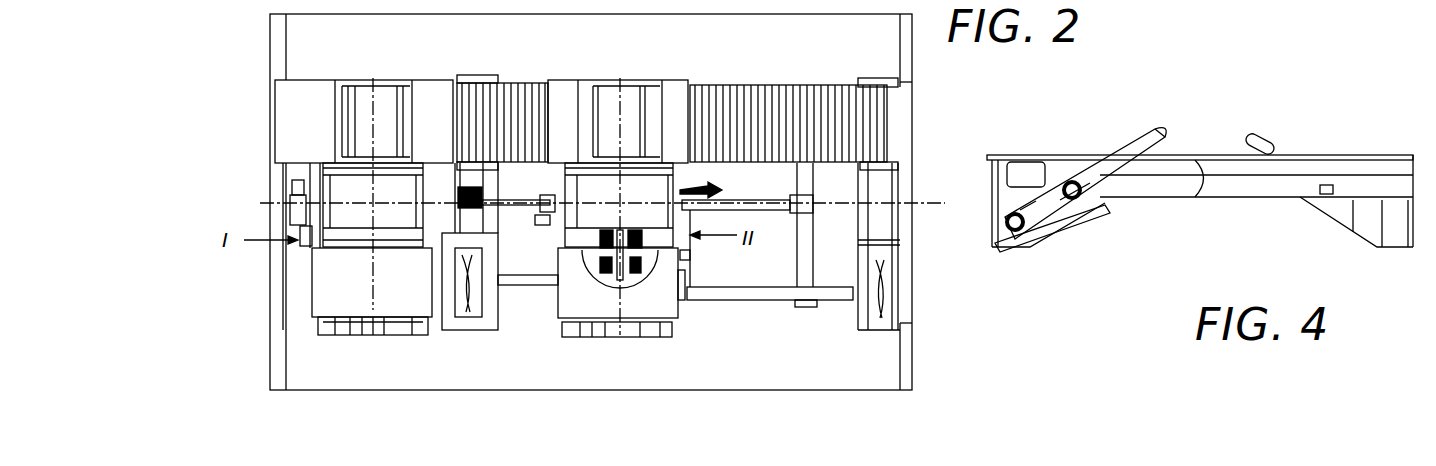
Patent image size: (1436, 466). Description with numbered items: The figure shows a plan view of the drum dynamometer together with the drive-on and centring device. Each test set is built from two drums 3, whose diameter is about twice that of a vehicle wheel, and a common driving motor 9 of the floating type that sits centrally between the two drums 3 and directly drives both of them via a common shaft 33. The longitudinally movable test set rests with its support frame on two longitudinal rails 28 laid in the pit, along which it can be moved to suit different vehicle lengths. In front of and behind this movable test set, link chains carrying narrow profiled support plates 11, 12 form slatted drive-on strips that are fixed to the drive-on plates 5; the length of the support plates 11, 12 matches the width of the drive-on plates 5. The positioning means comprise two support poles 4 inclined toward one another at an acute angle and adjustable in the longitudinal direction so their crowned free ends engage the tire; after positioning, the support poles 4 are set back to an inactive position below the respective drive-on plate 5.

In FIG. 2, the drum 3 is at (379, 105).
In FIG. 2, the support plate 11 is at (517, 100).
In FIG. 2, the support plate 12 is at (747, 107).
In FIG. 2, the driving motor 9 is at (405, 203).
In FIG. 2, the common shaft 33 is at (627, 277).
In FIG. 2, the longitudinal rail 28 is at (757, 300).
In FIG. 4, the support pole 4 is at (1103, 160).
In FIG. 4, the drive-on plate 5 is at (1332, 165).